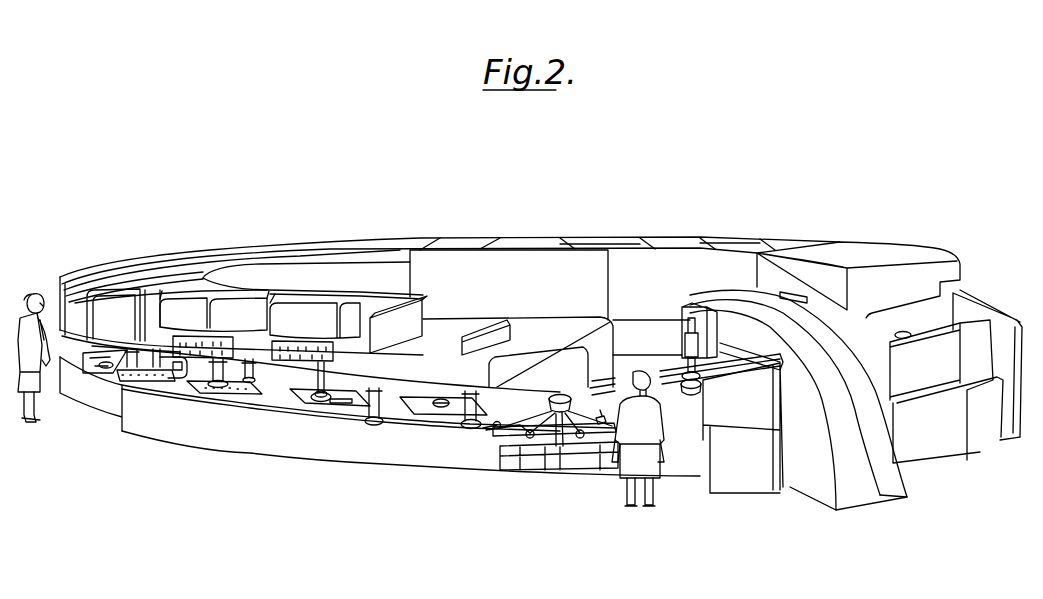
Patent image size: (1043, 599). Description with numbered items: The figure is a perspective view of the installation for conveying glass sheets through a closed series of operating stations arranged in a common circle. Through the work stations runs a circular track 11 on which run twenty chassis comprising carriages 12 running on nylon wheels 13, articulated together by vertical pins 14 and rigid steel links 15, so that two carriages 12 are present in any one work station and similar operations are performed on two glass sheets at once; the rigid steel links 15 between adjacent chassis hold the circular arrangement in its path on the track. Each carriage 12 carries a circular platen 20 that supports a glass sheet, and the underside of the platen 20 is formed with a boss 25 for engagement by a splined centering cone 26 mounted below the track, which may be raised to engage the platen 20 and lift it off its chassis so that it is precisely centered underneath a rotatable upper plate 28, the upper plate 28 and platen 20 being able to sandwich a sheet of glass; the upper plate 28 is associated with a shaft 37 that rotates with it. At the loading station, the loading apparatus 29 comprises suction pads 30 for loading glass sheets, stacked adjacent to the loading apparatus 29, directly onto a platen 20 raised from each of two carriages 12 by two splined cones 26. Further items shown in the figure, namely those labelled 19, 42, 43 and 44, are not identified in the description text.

The circular track 11 is at (552, 440).
The carriage 12 is at (553, 412).
The nylon wheel 13 is at (578, 438).
The vertical pin 14 is at (600, 424).
The rigid steel link 15 is at (500, 428).
The pivot 19 is at (494, 427).
The platen 20 is at (551, 407).
The boss 25 is at (563, 414).
The splined centering cone 26 is at (555, 420).
The rotatable upper plate 28 is at (322, 403).
The loading apparatus 29 is at (523, 333).
The suction pad 30 is at (468, 428).
The shaft 37 is at (313, 399).
The press 42 is at (687, 372).
The cabinet 43 is at (742, 405).
The conveyor 44 is at (1017, 435).